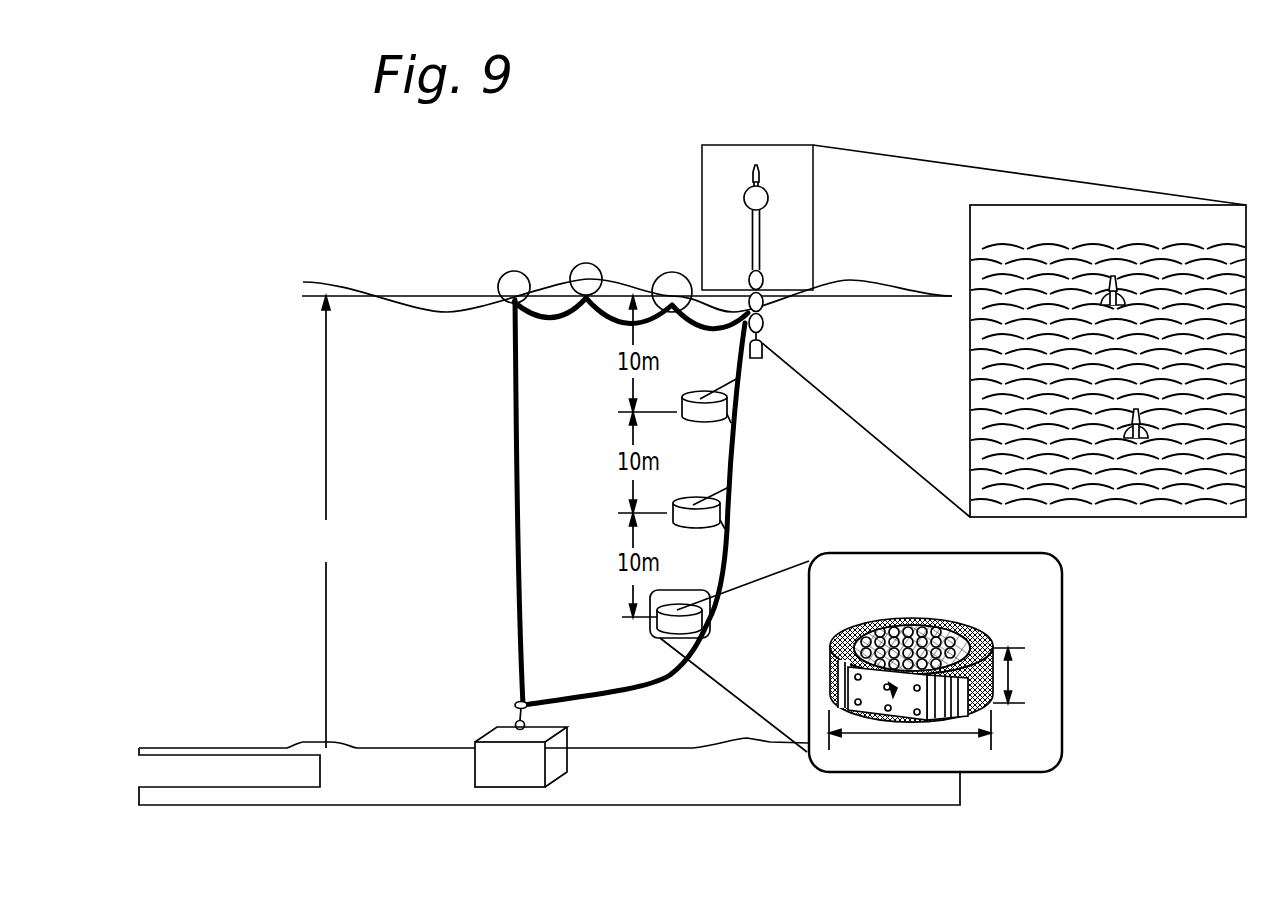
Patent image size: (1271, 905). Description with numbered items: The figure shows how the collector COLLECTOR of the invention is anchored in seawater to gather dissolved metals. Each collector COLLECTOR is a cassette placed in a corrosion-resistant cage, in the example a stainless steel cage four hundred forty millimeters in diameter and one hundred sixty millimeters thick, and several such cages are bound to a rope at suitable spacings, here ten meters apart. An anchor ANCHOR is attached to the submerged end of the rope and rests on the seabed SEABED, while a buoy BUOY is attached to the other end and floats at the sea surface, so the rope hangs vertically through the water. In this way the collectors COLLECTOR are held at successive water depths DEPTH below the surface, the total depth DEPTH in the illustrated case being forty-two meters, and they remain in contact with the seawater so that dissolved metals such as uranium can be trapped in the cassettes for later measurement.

The buoy BUOY is at (502, 273).
The depth DEPTH is at (332, 522).
The seabed SEABED is at (549, 771).
The anchor ANCHOR is at (520, 806).
The collector COLLECTOR is at (1040, 605).